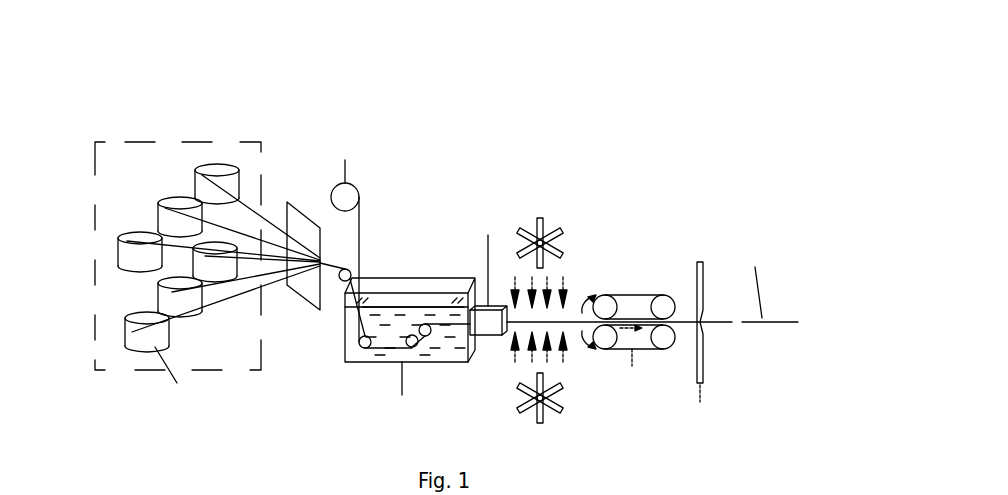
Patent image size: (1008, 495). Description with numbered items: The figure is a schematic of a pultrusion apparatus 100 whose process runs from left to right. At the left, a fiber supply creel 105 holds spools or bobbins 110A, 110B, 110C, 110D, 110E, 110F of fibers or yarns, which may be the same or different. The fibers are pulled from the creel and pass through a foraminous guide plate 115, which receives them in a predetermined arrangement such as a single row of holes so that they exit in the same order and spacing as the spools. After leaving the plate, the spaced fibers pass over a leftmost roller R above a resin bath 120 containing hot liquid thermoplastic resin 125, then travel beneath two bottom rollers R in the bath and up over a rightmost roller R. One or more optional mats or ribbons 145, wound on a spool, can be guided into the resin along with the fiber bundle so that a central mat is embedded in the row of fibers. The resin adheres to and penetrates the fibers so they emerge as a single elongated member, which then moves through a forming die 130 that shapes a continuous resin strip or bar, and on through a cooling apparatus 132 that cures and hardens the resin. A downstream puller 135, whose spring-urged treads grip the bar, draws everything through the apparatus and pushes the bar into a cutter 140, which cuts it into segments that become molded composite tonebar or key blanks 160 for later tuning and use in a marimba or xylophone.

The pultrusion apparatus 100 is at (250, 79).
The creel 105 is at (147, 140).
The spool of fibers 110A is at (130, 333).
The spool of fibers 110B is at (170, 293).
The spool of fibers 110C is at (203, 257).
The spool of fibers 110D is at (125, 240).
The spool of fibers 110E is at (163, 207).
The spool of fibers 110F is at (200, 173).
The guide plate 115 is at (303, 305).
The resin bath 120 is at (345, 362).
The resin 125 is at (405, 302).
The forming die 130 is at (488, 335).
The cooling apparatus 132 is at (570, 206).
The puller 135 is at (632, 295).
The cutter 140 is at (695, 285).
The mat or ribbon 145 is at (362, 193).
The molded composite tonebar or key blank 160 is at (770, 323).
The roller R is at (342, 282).